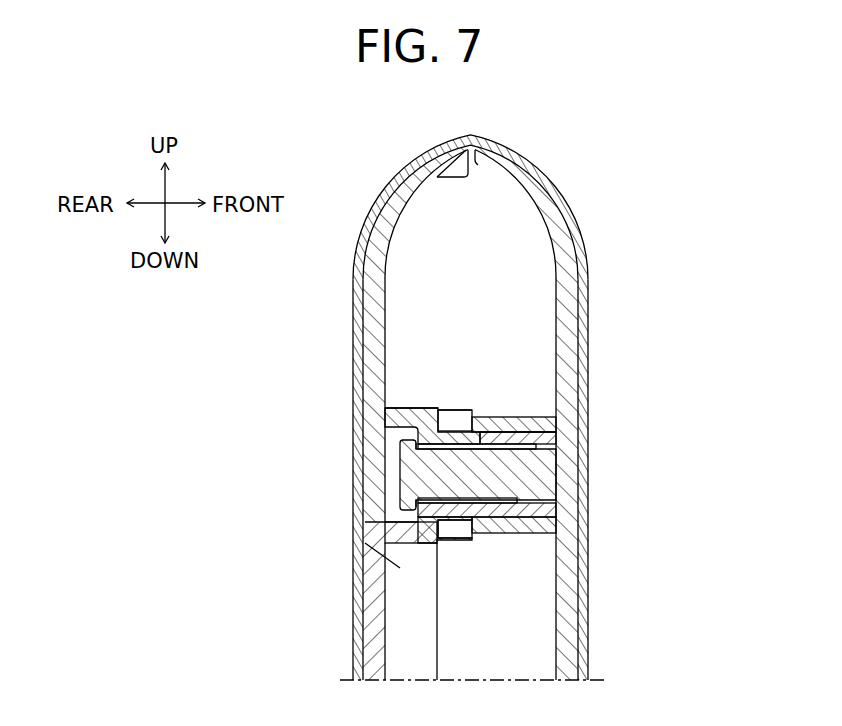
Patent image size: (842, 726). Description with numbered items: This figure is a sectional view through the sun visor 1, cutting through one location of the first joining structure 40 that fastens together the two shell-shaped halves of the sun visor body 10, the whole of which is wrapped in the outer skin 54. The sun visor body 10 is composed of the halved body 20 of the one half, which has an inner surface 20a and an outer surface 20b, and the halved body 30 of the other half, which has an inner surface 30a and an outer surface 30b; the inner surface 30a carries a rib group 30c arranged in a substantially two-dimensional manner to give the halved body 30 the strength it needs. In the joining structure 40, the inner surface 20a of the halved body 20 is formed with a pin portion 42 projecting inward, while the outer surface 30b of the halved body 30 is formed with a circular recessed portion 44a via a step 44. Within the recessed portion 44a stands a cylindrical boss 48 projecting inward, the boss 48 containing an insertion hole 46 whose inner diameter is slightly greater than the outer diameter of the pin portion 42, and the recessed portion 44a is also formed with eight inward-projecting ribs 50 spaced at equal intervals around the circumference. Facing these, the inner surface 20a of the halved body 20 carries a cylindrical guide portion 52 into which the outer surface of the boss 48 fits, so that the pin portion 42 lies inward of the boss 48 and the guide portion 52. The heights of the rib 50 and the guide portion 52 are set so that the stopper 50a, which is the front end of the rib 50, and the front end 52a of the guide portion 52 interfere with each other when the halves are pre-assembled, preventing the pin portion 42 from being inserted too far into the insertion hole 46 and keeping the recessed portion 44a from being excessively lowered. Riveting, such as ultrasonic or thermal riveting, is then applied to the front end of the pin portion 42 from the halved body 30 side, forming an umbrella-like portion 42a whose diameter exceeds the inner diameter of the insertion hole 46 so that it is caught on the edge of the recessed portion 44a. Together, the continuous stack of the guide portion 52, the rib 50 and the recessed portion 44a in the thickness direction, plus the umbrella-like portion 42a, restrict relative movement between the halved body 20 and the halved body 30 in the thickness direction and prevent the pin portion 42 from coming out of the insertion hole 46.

The sun visor 1 is at (680, 188).
The sun visor body 10 is at (548, 192).
The halved body of one half 20 is at (568, 622).
The inner surface of halved body 20 20a is at (556, 652).
The outer surface of halved body 20 20b is at (583, 577).
The halved body of the other half 30 is at (370, 622).
The inner surface of halved body 30 30a is at (370, 653).
The outer surface of halved body 30 30b is at (360, 570).
The rib group 30c is at (400, 546).
The first joining structure 40 is at (335, 472).
The pin portion 42 is at (510, 490).
The umbrella-like portion 42a is at (408, 482).
The step 44 is at (400, 438).
The recessed portion 44a is at (427, 432).
The insertion hole 46 is at (497, 450).
The boss 48 is at (508, 432).
The rib 50 is at (452, 416).
The stopper 50a is at (493, 418).
The guide portion 52 is at (490, 428).
The front end of guide portion 52a is at (493, 418).
The outer skin 54 is at (377, 232).